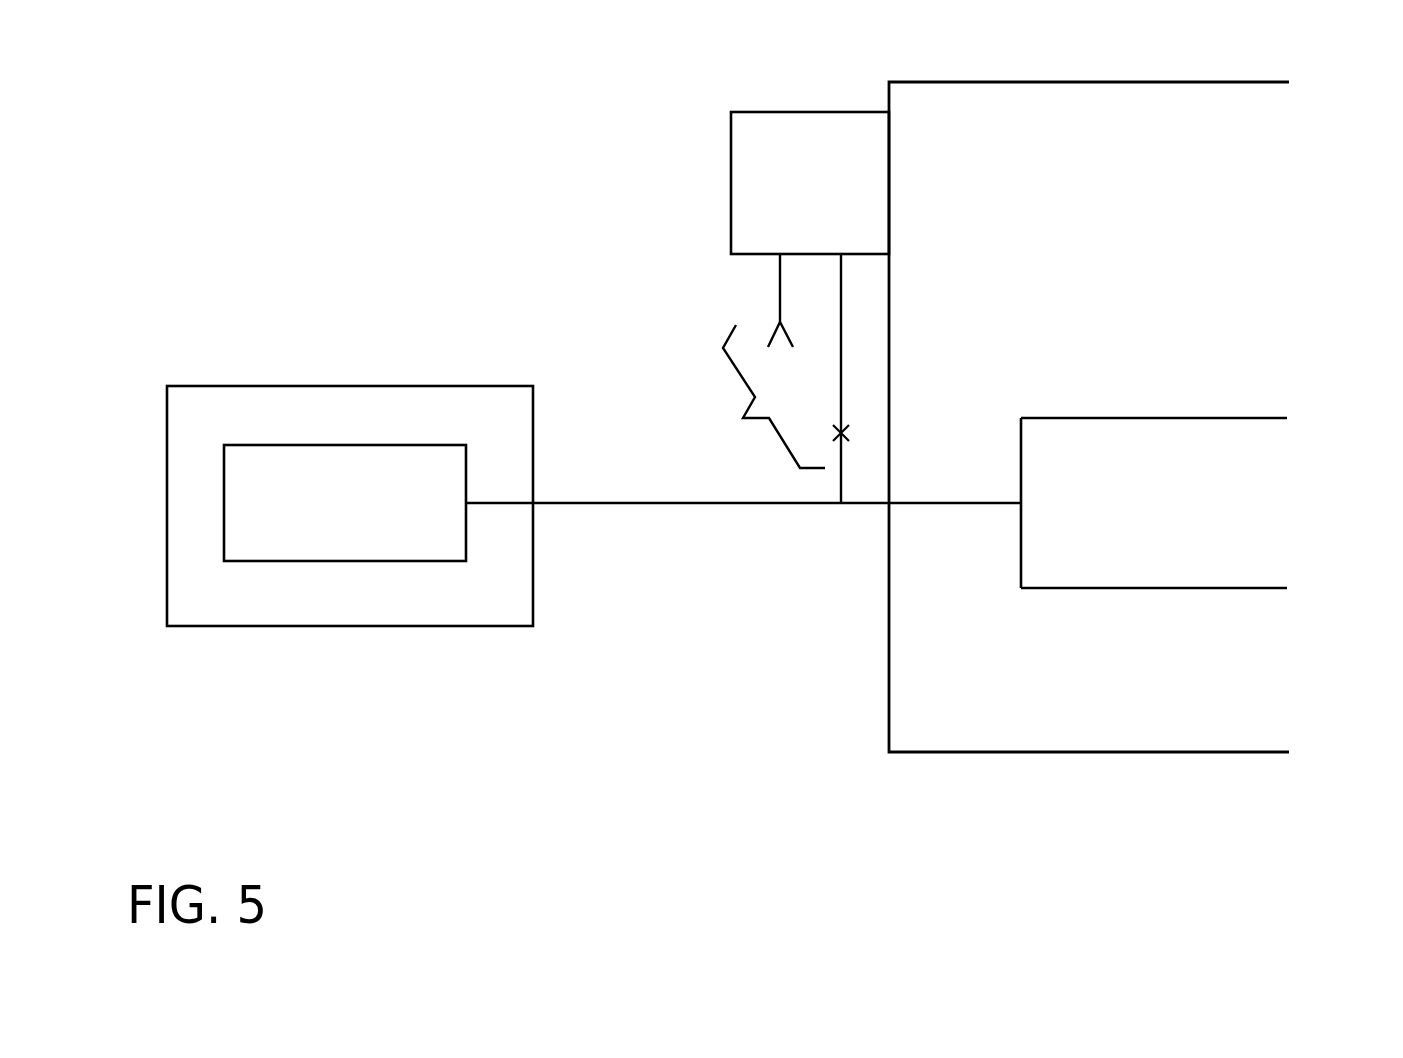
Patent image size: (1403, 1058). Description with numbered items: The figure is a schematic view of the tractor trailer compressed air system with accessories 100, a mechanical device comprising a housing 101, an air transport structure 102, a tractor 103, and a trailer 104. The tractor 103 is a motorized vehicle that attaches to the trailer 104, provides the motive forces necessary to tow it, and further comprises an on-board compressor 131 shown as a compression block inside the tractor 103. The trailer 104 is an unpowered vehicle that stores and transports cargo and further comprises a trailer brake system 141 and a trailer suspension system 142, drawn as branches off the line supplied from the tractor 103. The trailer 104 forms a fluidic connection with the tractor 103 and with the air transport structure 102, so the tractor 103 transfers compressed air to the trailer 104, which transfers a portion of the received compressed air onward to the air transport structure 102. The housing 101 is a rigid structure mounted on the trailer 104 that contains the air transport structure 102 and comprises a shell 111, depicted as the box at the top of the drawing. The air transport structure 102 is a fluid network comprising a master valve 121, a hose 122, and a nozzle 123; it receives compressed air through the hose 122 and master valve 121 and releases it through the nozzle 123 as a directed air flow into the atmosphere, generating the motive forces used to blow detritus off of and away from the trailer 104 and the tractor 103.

The tractor trailer compressed air system with accessories 100 is at (340, 128).
The housing 101 is at (748, 139).
The air transport structure 102 is at (743, 418).
The tractor 103 is at (377, 386).
The trailer 104 is at (1088, 82).
The shell 111 is at (805, 112).
The master valve 121 is at (850, 433).
The hose 122 is at (842, 385).
The nozzle 123 is at (797, 330).
The on-board compressor 131 is at (466, 478).
The trailer brake system 141 is at (1288, 400).
The trailer suspension system 142 is at (1265, 568).